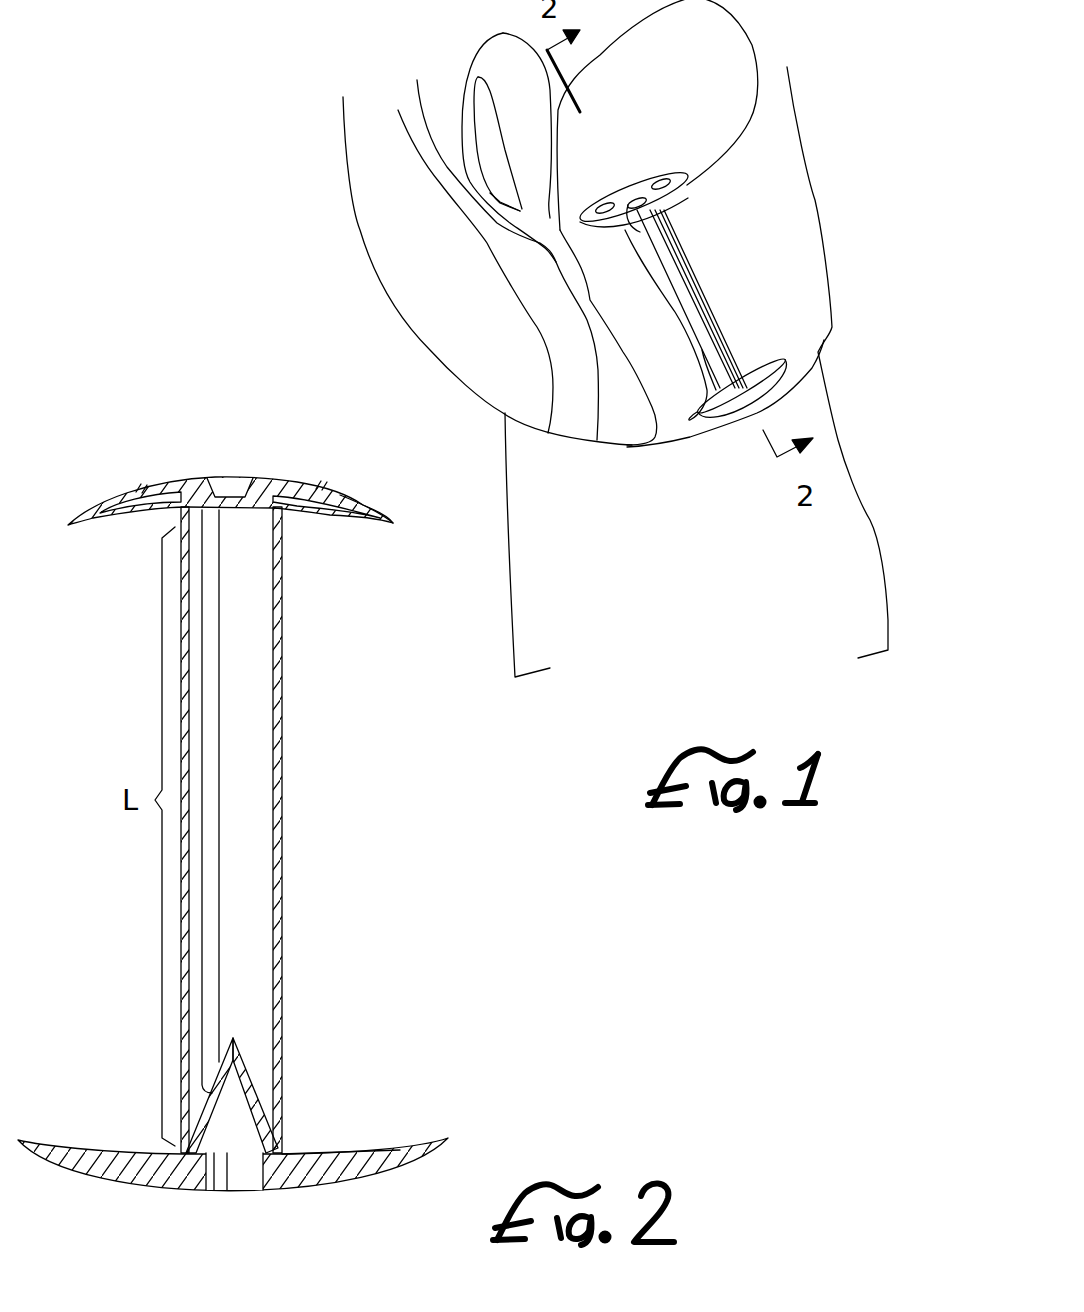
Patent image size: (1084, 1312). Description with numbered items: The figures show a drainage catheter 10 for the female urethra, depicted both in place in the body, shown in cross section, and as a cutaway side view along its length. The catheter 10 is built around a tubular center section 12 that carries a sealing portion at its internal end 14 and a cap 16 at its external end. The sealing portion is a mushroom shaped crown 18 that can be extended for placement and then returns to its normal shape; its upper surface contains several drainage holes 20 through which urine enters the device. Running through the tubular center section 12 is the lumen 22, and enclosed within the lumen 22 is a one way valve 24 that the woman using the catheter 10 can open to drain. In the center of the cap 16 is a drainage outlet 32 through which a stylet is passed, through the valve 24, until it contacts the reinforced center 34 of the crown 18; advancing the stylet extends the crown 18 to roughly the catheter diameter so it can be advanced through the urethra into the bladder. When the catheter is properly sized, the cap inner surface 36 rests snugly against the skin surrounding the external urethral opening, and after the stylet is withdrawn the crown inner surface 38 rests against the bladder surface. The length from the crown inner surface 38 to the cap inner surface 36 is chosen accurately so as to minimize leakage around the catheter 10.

In FIG. 1, the drainage catheter 10 is at (730, 262).
In FIG. 2, the drainage catheter 10 is at (233, 840).
In FIG. 1, the tubular center section 12 is at (700, 300).
In FIG. 2, the tubular center section 12 is at (278, 797).
In FIG. 1, the internal end 14 is at (644, 162).
In FIG. 2, the internal end 14 is at (245, 502).
In FIG. 1, the cap 16 is at (770, 345).
In FIG. 2, the cap 16 is at (233, 1175).
In FIG. 1, the mushroom shaped crown 18 is at (613, 200).
In FIG. 2, the mushroom shaped crown 18 is at (359, 500).
In FIG. 1, the drainage holes 20 is at (627, 185).
In FIG. 2, the drainage holes 20 is at (160, 487).
In FIG. 2, the lumen 22 is at (243, 902).
In FIG. 2, the one way valve 24 is at (253, 1065).
In FIG. 2, the drainage outlet 32 is at (240, 1177).
In FIG. 2, the reinforced center 34 is at (222, 482).
In FIG. 1, the cap inner surface 36 is at (760, 365).
In FIG. 2, the cap inner surface 36 is at (305, 1155).
In FIG. 1, the crown inner surface 38 is at (610, 232).